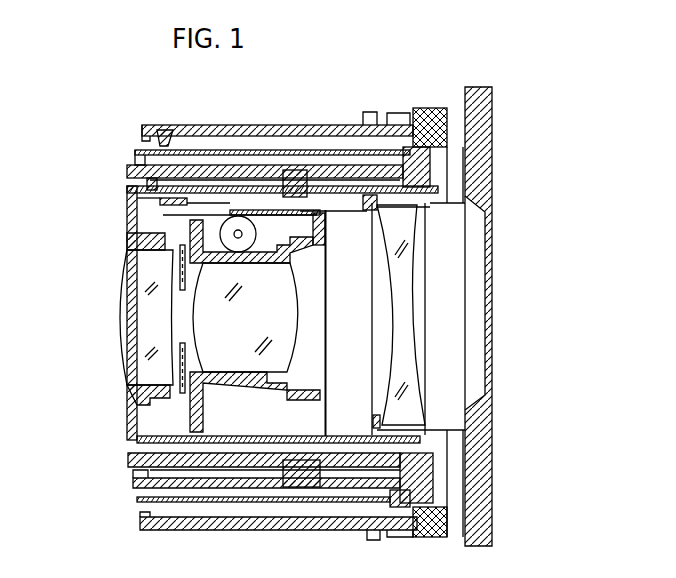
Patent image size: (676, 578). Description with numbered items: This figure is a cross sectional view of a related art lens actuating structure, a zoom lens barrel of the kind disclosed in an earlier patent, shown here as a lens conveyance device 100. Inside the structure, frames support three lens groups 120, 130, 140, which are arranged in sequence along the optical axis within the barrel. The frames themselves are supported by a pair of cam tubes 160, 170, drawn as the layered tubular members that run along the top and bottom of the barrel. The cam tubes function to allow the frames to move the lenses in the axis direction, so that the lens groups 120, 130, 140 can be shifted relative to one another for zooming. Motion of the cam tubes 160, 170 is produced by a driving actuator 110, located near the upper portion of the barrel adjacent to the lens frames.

The lens module housing 100 is at (407, 205).
The driving actuator 110 is at (225, 237).
The lens group 120 is at (150, 353).
The lens group 130 is at (207, 306).
The lens group 140 is at (405, 352).
The cam tube 160 is at (148, 471).
The cam tube 170 is at (133, 498).